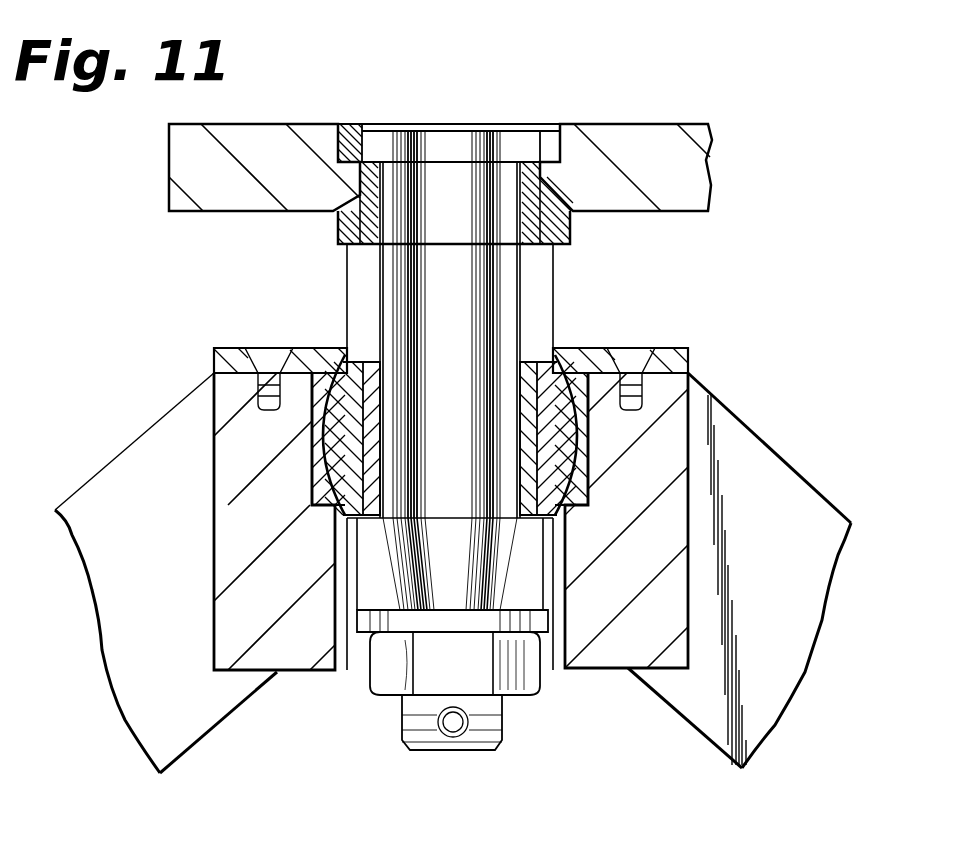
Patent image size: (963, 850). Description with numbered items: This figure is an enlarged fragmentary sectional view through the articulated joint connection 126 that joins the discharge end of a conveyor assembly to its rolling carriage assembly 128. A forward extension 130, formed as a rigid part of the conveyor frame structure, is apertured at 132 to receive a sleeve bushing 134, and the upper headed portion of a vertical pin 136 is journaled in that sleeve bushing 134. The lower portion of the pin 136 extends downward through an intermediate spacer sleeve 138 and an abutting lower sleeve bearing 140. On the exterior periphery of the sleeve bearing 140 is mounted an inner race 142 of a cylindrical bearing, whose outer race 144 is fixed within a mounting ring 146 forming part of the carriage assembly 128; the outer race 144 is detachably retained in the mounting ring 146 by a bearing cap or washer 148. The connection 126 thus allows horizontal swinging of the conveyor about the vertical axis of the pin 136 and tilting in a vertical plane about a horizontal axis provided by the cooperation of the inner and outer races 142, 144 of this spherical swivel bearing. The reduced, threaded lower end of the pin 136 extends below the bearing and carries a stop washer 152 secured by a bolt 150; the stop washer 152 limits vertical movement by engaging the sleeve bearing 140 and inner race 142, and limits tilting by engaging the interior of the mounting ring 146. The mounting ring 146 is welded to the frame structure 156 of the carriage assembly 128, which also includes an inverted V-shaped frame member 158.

The articulated joint connection 126 is at (390, 120).
The rolling carriage assembly 128 is at (104, 438).
The forward extension 130 is at (612, 136).
The aperture 132 is at (573, 242).
The sleeve bushing 134 is at (362, 201).
The pin 136 is at (479, 160).
The intermediate spacer sleeve 138 is at (365, 293).
The lower sleeve bearing 140 is at (548, 340).
The inner race 142 is at (330, 372).
The outer race 144 is at (318, 457).
The mounting ring 146 is at (678, 432).
The bearing cap or washer 148 is at (212, 350).
The bolt 150 is at (525, 680).
The stop washer 152 is at (336, 668).
The frame structure 156 is at (830, 452).
The inverted V-shaped frame member 158 is at (828, 521).